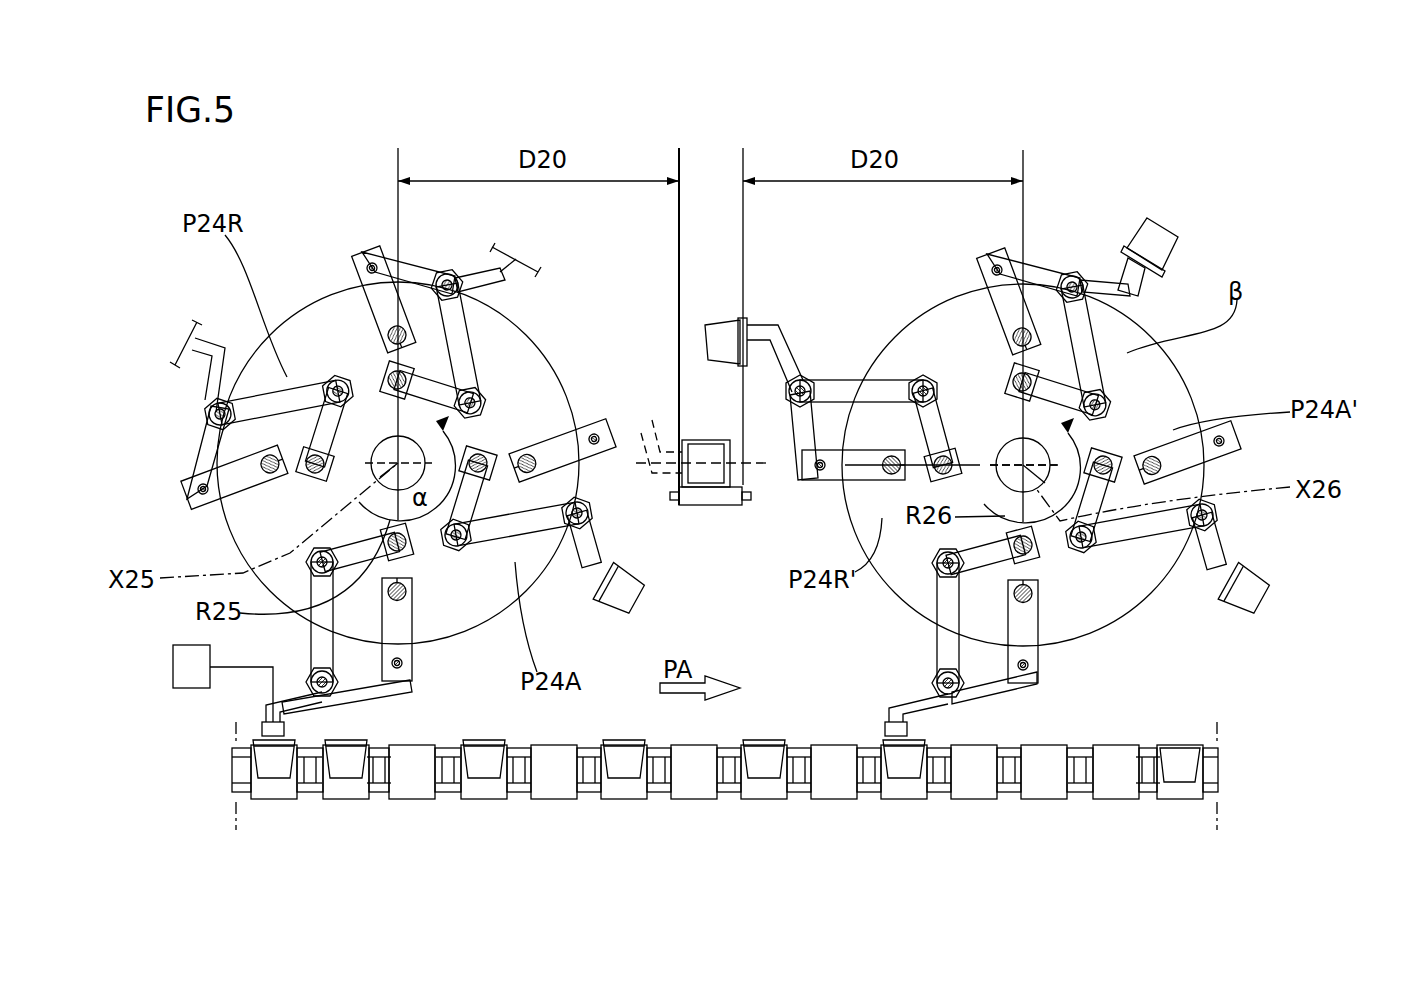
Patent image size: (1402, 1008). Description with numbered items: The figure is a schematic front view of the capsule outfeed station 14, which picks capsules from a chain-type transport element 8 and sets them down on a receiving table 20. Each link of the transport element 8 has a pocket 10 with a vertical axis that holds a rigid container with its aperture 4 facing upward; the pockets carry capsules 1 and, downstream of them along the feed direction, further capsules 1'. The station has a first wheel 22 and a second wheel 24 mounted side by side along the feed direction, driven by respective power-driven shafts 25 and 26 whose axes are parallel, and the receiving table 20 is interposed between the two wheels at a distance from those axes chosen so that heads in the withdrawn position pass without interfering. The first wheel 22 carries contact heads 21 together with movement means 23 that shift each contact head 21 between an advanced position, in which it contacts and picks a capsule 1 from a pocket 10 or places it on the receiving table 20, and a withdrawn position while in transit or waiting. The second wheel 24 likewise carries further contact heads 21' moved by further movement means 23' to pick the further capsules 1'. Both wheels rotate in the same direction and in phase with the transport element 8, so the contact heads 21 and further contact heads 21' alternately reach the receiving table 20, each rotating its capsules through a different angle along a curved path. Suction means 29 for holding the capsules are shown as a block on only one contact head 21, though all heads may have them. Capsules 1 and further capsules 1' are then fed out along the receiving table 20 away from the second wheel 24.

The capsule 1 is at (500, 592).
The further capsule 1' is at (837, 515).
The aperture 4 is at (623, 750).
The transport element 8 is at (725, 801).
The pocket 10 is at (415, 770).
The outfeed station 14 is at (698, 282).
The receiving table 20 is at (695, 420).
The contact head 21 is at (336, 461).
The further contact head 21' is at (886, 691).
The first wheel 22 is at (327, 320).
The movement means 23 is at (363, 250).
The further movement means 23' is at (1044, 259).
The second wheel 24 is at (1143, 413).
The power-driven shaft 25 is at (347, 396).
The power-driven shaft 26 is at (1012, 450).
The suction means 29 is at (207, 681).